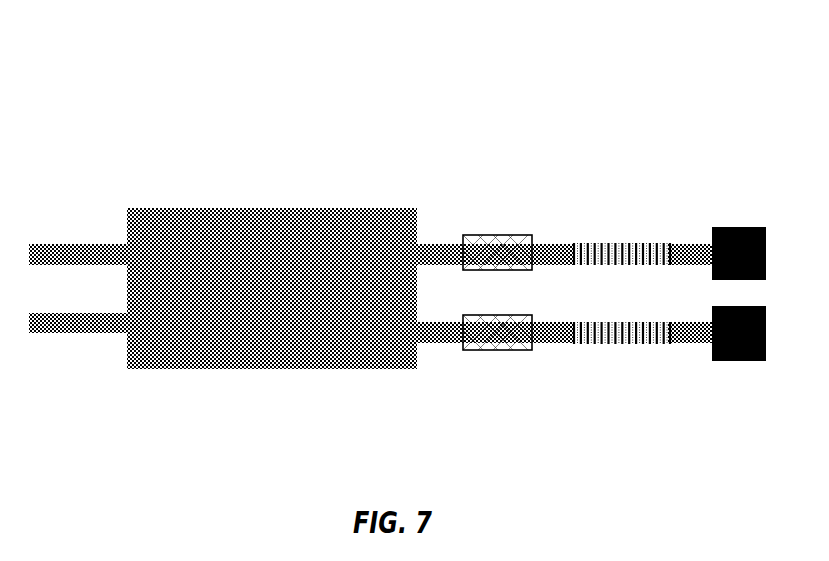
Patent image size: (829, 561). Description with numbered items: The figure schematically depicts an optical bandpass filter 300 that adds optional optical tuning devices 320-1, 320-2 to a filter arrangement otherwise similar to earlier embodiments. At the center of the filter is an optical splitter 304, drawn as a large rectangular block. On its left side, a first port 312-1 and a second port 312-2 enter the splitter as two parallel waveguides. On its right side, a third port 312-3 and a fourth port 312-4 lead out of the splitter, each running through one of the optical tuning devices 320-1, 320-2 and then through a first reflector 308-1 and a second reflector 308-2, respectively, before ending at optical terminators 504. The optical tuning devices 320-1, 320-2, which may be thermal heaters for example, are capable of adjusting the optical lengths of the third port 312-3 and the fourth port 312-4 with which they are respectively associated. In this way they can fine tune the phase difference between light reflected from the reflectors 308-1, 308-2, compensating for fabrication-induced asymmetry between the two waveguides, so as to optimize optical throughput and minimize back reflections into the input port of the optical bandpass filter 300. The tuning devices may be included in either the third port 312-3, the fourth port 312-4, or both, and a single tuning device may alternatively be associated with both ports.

The optical bandpass filter 300 is at (168, 100).
The optical splitter 304 is at (308, 223).
The first port 312-1 is at (88, 250).
The second port 312-2 is at (88, 331).
The third port 312-3 is at (435, 243).
The fourth port 312-4 is at (435, 335).
The optical tuning device 320-1 is at (510, 243).
The optical tuning device 320-2 is at (513, 349).
The first reflector 308-1 is at (613, 243).
The second reflector 308-2 is at (618, 344).
The optical terminators 504 is at (738, 228).